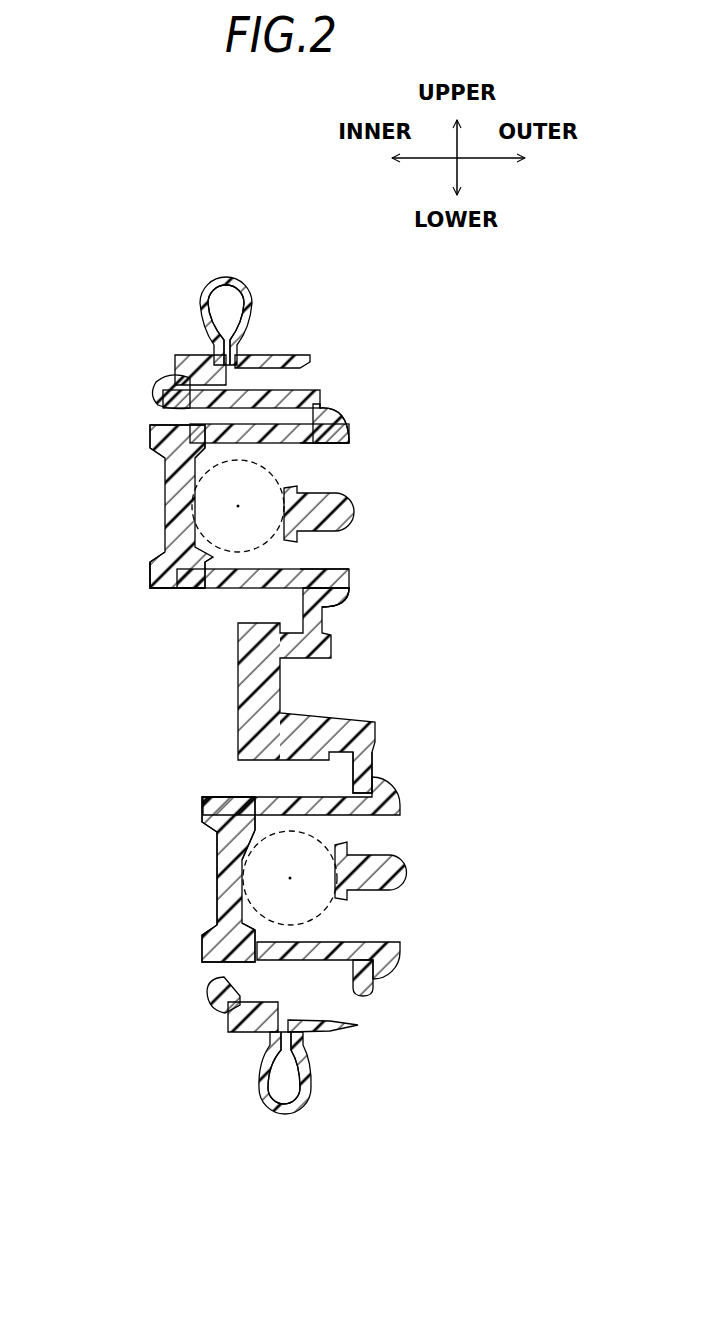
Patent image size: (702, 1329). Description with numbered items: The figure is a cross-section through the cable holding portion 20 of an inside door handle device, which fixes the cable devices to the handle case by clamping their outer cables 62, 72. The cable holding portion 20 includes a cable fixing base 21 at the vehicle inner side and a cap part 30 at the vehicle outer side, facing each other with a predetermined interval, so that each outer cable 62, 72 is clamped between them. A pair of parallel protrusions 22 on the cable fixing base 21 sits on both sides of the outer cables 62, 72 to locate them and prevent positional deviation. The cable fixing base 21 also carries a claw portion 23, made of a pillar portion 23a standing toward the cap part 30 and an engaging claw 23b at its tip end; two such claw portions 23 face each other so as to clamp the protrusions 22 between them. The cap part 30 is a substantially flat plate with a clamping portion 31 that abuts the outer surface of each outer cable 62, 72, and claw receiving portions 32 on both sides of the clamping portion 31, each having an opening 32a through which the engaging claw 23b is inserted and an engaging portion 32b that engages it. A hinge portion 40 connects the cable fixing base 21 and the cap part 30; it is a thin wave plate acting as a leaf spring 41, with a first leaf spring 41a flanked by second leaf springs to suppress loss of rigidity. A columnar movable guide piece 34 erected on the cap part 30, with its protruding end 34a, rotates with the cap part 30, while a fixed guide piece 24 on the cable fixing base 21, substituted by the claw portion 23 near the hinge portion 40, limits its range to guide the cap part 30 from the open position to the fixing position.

The cable holding portion 20 is at (279, 670).
The cable fixing base 21 is at (164, 490).
The protrusion 22 is at (158, 426).
The claw portion 23 is at (402, 800).
The pillar portion 23a is at (162, 392).
The engaging claw 23b is at (342, 412).
The fixed guide piece 24 is at (356, 444).
The cap part 30 is at (349, 695).
The clamping portion 31 is at (357, 518).
The claw receiving portion 32 is at (365, 775).
The opening 32a is at (302, 469).
The engaging portion 32b is at (345, 418).
The movable guide piece 34 is at (255, 405).
The protruding end 34a is at (160, 380).
The hinge portion 40 is at (246, 694).
The leaf spring 41 is at (257, 718).
The first leaf spring 41a is at (252, 300).
The outer cable 62 is at (152, 545).
The outer cable 72 is at (218, 862).